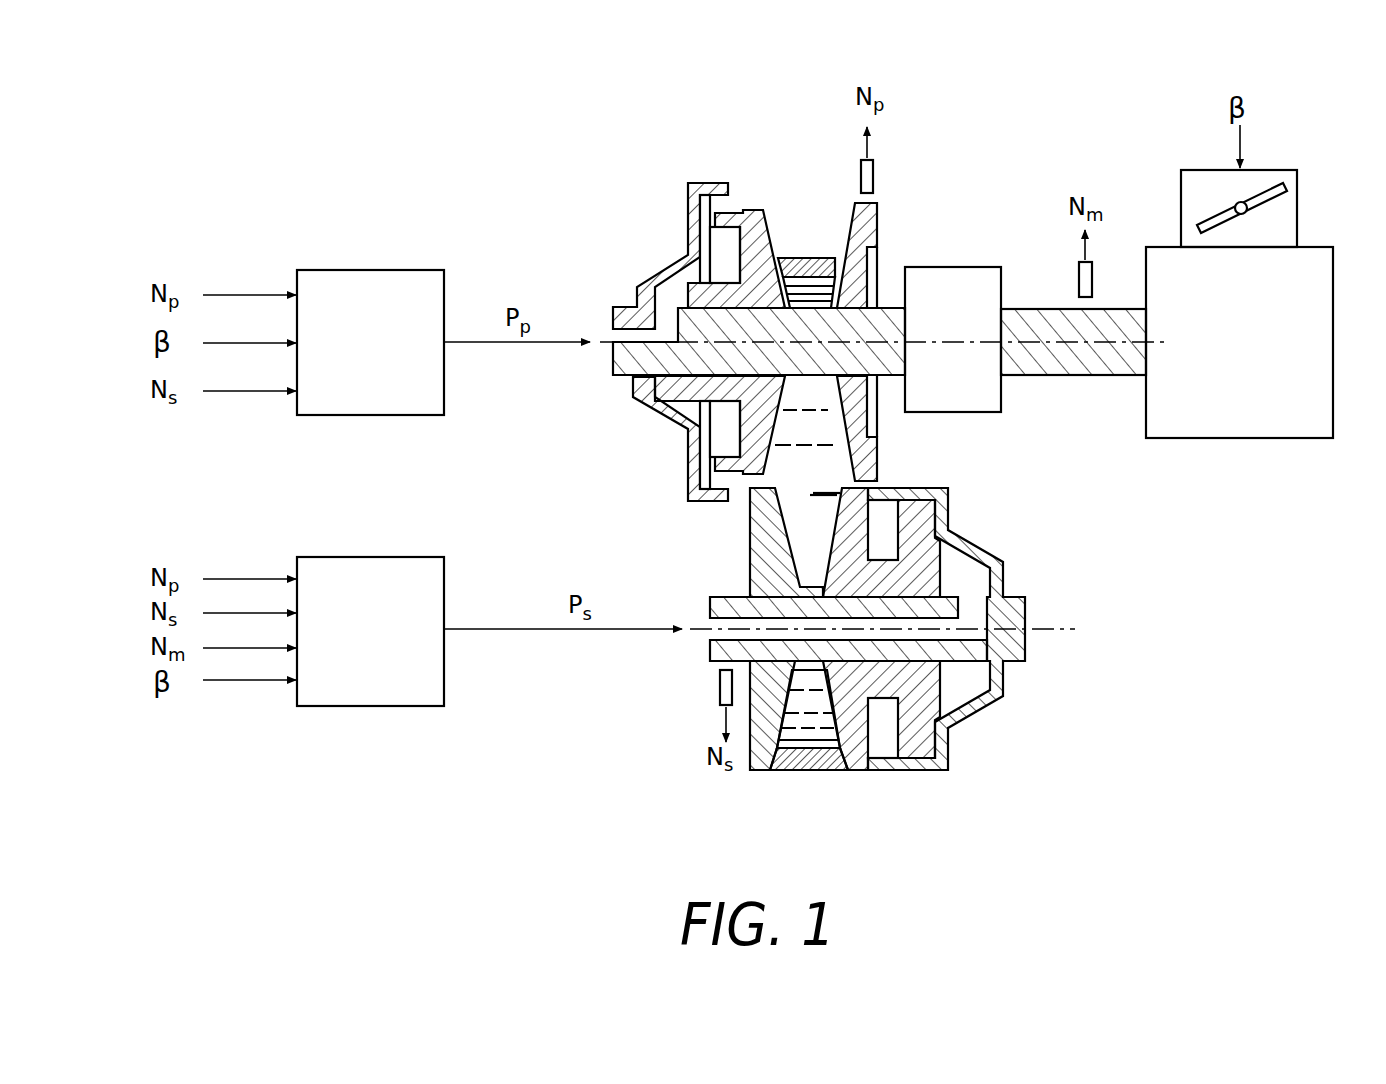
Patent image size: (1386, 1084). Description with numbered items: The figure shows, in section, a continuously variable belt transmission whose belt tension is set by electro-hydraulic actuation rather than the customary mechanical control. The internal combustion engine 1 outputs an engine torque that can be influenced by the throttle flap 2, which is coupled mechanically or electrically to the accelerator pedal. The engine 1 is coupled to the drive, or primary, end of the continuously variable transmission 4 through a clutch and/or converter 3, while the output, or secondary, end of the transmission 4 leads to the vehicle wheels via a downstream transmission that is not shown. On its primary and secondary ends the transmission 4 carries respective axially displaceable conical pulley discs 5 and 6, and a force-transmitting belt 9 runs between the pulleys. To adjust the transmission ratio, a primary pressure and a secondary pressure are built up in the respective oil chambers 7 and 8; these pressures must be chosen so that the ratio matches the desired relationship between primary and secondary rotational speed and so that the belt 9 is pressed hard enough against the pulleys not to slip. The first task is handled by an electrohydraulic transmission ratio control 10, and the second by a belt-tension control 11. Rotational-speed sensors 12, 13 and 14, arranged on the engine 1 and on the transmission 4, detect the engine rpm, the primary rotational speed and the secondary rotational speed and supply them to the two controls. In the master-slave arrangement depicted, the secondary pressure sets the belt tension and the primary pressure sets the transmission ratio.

The internal combustion engine 1 is at (1312, 336).
The throttle flap 2 is at (1300, 207).
The clutch and/or converter 3 is at (950, 283).
The continuously variable transmission 4 is at (880, 214).
The primary conical pulley disc 5 is at (762, 212).
The secondary conical pulley disc 6 is at (892, 772).
The primary oil chamber 7 is at (722, 243).
The secondary oil chamber 8 is at (930, 690).
The force-transmitting belt 9 is at (812, 772).
The transmission ratio control 10 is at (369, 285).
The belt-tension control 11 is at (362, 693).
The rotational-speed sensor 12 is at (1079, 268).
The rotational-speed sensor 13 is at (860, 178).
The rotational-speed sensor 14 is at (720, 687).